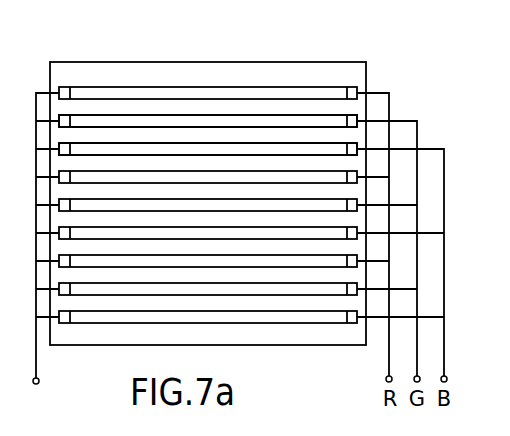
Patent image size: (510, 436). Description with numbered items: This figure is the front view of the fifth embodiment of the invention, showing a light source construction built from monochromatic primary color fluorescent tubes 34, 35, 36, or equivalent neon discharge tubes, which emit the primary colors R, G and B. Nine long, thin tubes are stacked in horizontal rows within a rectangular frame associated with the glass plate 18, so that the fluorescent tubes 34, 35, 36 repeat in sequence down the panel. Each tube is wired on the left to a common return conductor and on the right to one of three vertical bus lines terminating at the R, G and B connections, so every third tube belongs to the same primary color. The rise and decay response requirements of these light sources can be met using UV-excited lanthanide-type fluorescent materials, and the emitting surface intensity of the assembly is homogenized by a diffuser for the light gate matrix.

The glass plate 18 is at (97, 62).
The monochromatic primary color fluorescent tube 34 is at (171, 93).
The monochromatic primary color fluorescent tube 35 is at (217, 118).
The monochromatic primary color fluorescent tube 36 is at (282, 147).